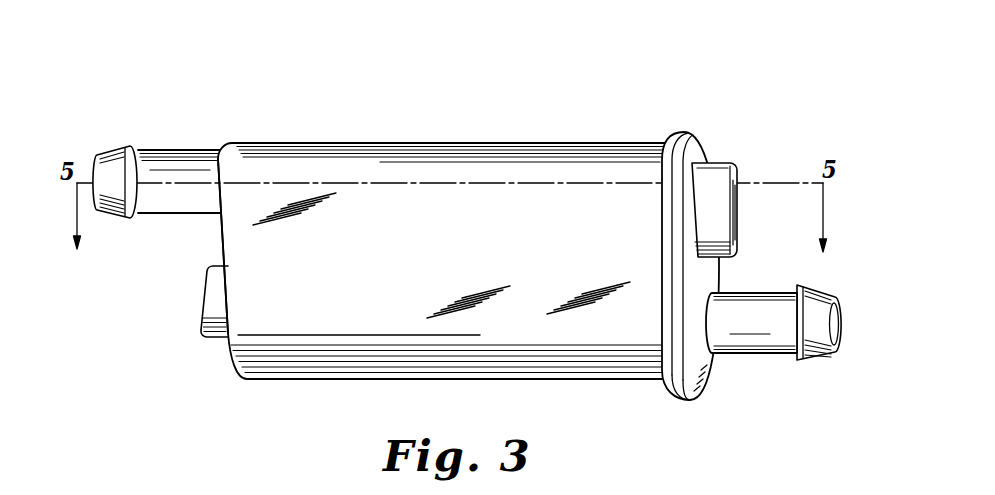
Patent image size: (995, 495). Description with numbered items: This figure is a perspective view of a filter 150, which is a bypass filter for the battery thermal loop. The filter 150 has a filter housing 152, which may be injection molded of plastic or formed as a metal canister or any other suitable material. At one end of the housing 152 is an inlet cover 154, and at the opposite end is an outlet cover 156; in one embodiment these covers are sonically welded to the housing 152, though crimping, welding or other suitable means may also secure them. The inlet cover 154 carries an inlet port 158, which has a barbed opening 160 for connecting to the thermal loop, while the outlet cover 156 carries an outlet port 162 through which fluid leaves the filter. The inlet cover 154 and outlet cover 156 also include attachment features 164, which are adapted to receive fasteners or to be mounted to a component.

The filter 150 is at (465, 90).
The filter housing 152 is at (447, 142).
The inlet cover 154 is at (219, 238).
The outlet cover 156 is at (708, 282).
The inlet port 158 is at (178, 150).
The barbed opening 160 is at (118, 152).
The outlet port 162 is at (740, 355).
The attachment features 164 is at (200, 311).